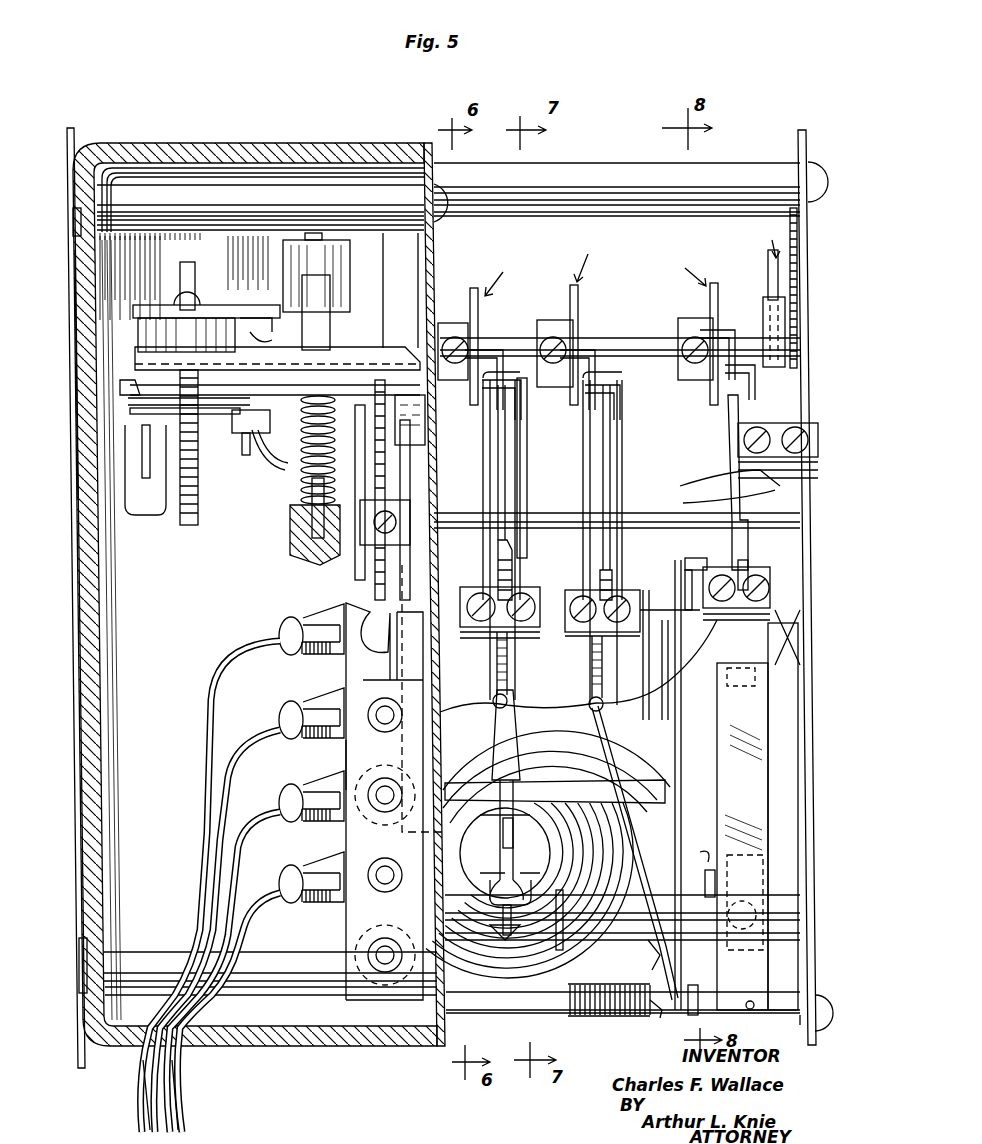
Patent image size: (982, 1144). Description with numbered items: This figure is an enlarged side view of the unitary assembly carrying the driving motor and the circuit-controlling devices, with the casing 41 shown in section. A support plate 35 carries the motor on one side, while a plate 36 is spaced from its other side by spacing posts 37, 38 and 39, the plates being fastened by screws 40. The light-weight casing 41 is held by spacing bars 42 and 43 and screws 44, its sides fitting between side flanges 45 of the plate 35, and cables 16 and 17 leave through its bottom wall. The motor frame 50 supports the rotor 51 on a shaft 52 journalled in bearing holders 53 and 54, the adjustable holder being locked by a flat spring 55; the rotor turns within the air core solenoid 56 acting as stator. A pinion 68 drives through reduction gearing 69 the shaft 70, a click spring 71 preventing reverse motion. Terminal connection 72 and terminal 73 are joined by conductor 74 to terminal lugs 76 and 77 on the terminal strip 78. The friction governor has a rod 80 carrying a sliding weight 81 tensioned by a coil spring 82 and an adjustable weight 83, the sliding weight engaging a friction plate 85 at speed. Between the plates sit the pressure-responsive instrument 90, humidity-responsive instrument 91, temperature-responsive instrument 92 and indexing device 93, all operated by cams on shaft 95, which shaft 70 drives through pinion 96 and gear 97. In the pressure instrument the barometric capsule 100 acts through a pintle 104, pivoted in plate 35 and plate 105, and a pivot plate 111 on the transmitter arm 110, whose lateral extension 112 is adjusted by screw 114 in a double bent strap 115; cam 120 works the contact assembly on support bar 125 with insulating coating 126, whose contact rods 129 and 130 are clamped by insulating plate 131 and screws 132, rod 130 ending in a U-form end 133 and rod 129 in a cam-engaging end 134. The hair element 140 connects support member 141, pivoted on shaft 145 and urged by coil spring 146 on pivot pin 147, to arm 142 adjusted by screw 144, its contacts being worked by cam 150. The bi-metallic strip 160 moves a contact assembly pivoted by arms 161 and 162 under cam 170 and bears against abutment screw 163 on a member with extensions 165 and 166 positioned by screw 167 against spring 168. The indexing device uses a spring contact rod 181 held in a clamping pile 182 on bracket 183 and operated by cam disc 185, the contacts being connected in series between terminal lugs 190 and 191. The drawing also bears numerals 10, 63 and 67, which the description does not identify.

The casing 10 is at (110, 188).
The cable 16 is at (185, 1093).
The cable 17 is at (138, 1086).
The support plate 35 is at (436, 246).
The plate 36 is at (800, 131).
The spacing post 37 is at (616, 165).
The spacing post 38 is at (622, 588).
The spacing post 39 is at (692, 896).
The screws 40 is at (798, 180).
The casing 41 is at (72, 294).
The spacing bar 42 is at (260, 212).
The spacing bar 43 is at (295, 940).
The screws 44 is at (73, 226).
The side flanges 45 is at (408, 272).
The frame 50 is at (350, 348).
The rotor 51 is at (198, 492).
The shaft 52 is at (160, 412).
The bearing holder 53 is at (126, 388).
The bearing holder 54 is at (432, 402).
The flat spring 55 is at (150, 401).
The air core solenoid 56 is at (133, 312).
The curved arm 63 is at (270, 450).
The pocket 67 is at (125, 470).
The pinion 68 is at (386, 350).
The reduction gearing 69 is at (373, 563).
The shaft 70 is at (532, 513).
The click spring 71 is at (396, 690).
The terminal connection 72 is at (268, 305).
The terminal 73 is at (232, 433).
The conductor 74 is at (255, 334).
The terminal lug 76 is at (303, 616).
The terminal lug 77 is at (309, 702).
The terminal strip 78 is at (346, 757).
The rod 80 is at (300, 462).
The weight 81 is at (290, 548).
The coil spring 82 is at (300, 500).
The weight 83 is at (340, 262).
The friction plate 85 is at (332, 318).
The pressure-responsive instrument 90 is at (500, 274).
The humidity-responsive instrument 91 is at (587, 257).
The temperature-responsive instrument 92 is at (687, 267).
The indexing circuit-controlling device 93 is at (764, 240).
The shaft 95 is at (610, 345).
The pinion 96 is at (790, 568).
The gear 97 is at (790, 213).
The barometric capsule 100 is at (560, 745).
The pintle 104 is at (612, 784).
The plate 105 is at (674, 722).
The transmitter arm 110 is at (516, 716).
The pivot plate 111 is at (480, 818).
The lateral extension 112 is at (503, 840).
The adjusting screw 114 is at (478, 1016).
The double bent strap 115 is at (505, 853).
The cam 120 is at (470, 303).
The support bar 125 is at (490, 448).
The insulating coating 126 is at (508, 370).
The spring contact rod 129 is at (498, 552).
The contact rod 130 is at (498, 578).
The plate of insulating material 131 is at (540, 630).
The screws 132 is at (550, 700).
The U-form end 133 is at (527, 398).
The cam-engaging end 134 is at (484, 350).
The humidity-sensitive element 140 is at (712, 770).
The support member 141 is at (650, 956).
The arm 142 is at (688, 560).
The screw 144 is at (742, 562).
The shaft 145 is at (540, 1017).
The coil spring 146 is at (585, 1018).
The pivot pin 147 is at (648, 1020).
The cam 150 is at (578, 294).
The bi-metallic strip 160 is at (768, 756).
The arm 161 is at (668, 650).
The arm 162 is at (788, 810).
The screw 163 is at (750, 1014).
The lateral extension 165 is at (690, 984).
The lateral extension 166 is at (806, 1022).
The screw 167 is at (766, 890).
The spring 168 is at (704, 845).
The cam 170 is at (710, 301).
The spring contact rod 181 is at (764, 318).
The clamping pile 182 is at (711, 482).
The bracket 183 is at (731, 468).
The cam disc 185 is at (770, 270).
The terminal lug 190 is at (298, 786).
The terminal lug 191 is at (298, 870).